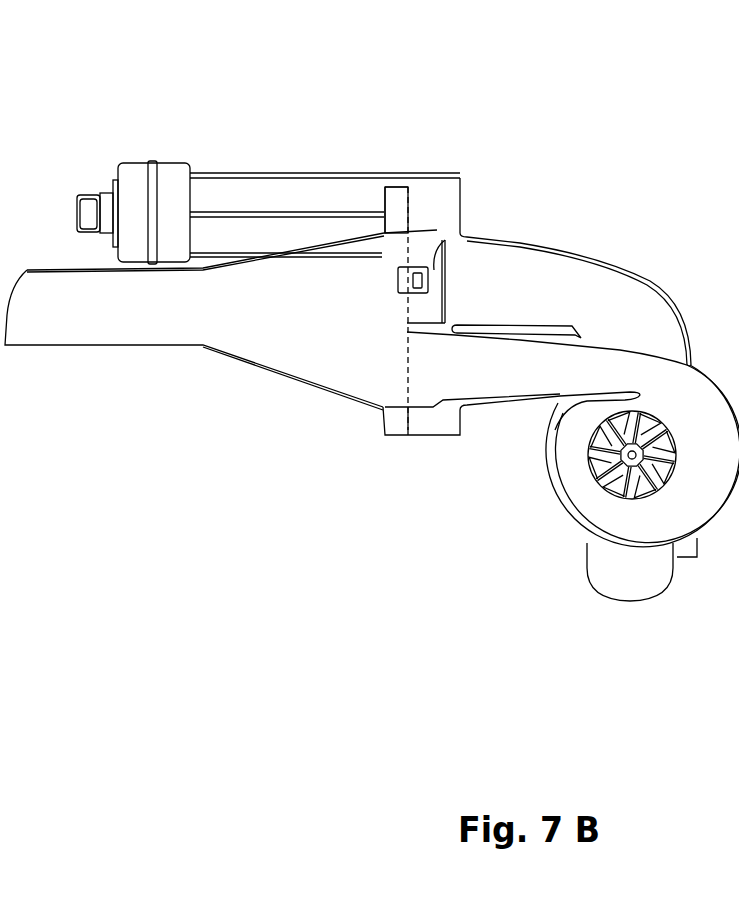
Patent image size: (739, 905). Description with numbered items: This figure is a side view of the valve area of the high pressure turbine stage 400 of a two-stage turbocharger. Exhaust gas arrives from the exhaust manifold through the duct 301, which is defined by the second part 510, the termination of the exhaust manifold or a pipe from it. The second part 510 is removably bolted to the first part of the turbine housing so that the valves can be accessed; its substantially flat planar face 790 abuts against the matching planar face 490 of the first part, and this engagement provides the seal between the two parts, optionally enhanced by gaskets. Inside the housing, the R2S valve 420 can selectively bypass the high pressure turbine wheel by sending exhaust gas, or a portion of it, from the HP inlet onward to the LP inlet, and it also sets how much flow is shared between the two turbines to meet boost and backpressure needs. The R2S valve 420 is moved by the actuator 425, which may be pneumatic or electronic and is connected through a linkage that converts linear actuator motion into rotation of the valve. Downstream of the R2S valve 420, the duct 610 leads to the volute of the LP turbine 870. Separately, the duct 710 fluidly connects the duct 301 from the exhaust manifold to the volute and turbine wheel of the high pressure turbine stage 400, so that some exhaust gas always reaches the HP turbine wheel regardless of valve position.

The duct 301 is at (293, 320).
The high pressure turbine stage 400 is at (558, 512).
The R2S valve 420 is at (432, 268).
The actuator 425 is at (135, 177).
The planar face 490 is at (413, 208).
The second part 510 is at (383, 412).
The duct 610 is at (547, 293).
The duct 710 is at (522, 368).
The planar face 790 is at (407, 207).
The LP turbine 870 is at (625, 572).